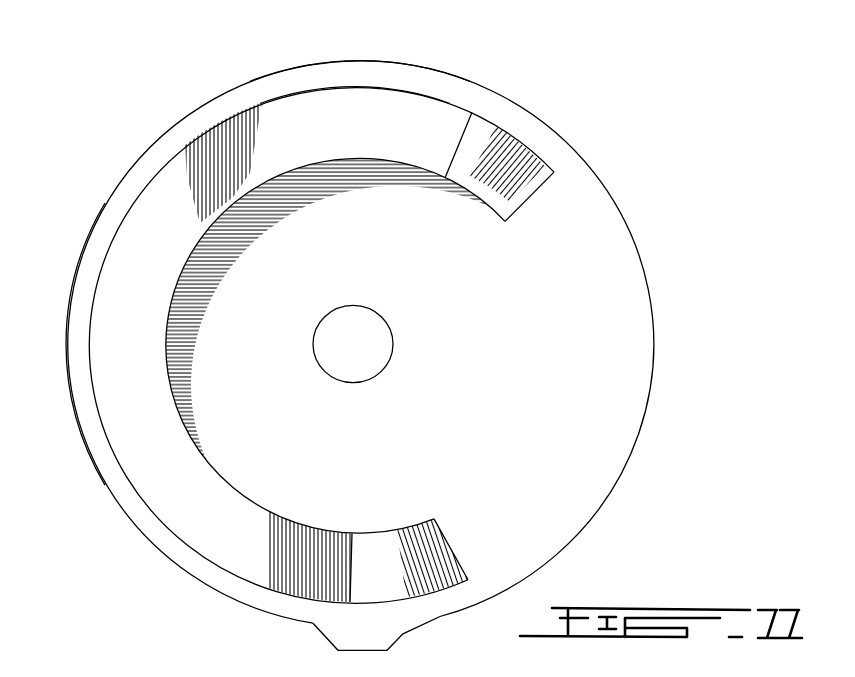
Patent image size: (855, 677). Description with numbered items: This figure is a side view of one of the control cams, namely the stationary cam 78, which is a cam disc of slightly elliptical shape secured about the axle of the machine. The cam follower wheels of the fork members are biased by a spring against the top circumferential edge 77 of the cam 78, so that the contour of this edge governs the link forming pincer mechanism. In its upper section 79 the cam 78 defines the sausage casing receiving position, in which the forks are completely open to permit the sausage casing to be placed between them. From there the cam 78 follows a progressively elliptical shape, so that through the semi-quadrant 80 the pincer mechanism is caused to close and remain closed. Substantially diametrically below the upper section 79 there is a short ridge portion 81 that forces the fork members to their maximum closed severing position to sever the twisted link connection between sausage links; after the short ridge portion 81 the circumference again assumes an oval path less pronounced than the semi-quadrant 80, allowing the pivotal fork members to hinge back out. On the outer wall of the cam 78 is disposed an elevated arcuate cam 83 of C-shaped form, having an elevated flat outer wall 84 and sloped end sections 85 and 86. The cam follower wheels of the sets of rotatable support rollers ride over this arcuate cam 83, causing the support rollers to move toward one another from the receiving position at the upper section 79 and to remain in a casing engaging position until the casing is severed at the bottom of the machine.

The top circumferential edge 77 is at (653, 327).
The cam 78 is at (613, 382).
The upper section 79 is at (362, 62).
The semi-quadrant 80 is at (65, 337).
The short ridge portion 81 is at (347, 643).
The arcuate cam 83 is at (192, 285).
The elevated flat outer wall 84 is at (347, 126).
The sloped end section 85 is at (497, 203).
The sloped end section 86 is at (427, 530).